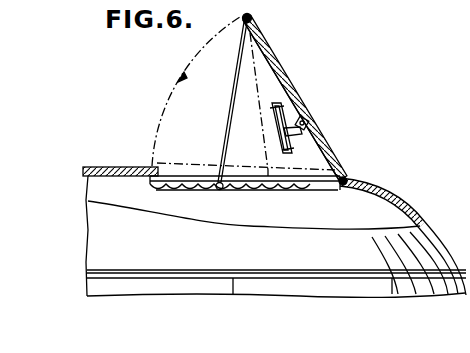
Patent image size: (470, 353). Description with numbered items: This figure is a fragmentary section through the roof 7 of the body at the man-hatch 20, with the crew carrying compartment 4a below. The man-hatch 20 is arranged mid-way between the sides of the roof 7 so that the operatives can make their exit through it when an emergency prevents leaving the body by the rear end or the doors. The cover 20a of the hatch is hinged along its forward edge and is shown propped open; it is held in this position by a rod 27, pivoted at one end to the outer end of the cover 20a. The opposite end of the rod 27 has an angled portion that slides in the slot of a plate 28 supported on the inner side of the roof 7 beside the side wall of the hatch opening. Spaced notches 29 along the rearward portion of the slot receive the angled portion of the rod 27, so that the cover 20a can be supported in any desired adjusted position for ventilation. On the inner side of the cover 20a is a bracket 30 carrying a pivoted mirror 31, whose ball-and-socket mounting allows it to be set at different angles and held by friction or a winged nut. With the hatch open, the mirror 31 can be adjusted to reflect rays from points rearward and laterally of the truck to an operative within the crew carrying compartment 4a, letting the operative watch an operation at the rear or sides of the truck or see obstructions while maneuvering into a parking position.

The crew carrying compartment 4a is at (90, 283).
The roof 7 is at (115, 164).
The man-hatch 20 is at (295, 97).
The cover 20a is at (273, 52).
The rod 27 is at (256, 135).
The plate 28 is at (320, 197).
The notch 29 is at (190, 189).
The bracket 30 is at (305, 138).
The mirror 31 is at (274, 110).